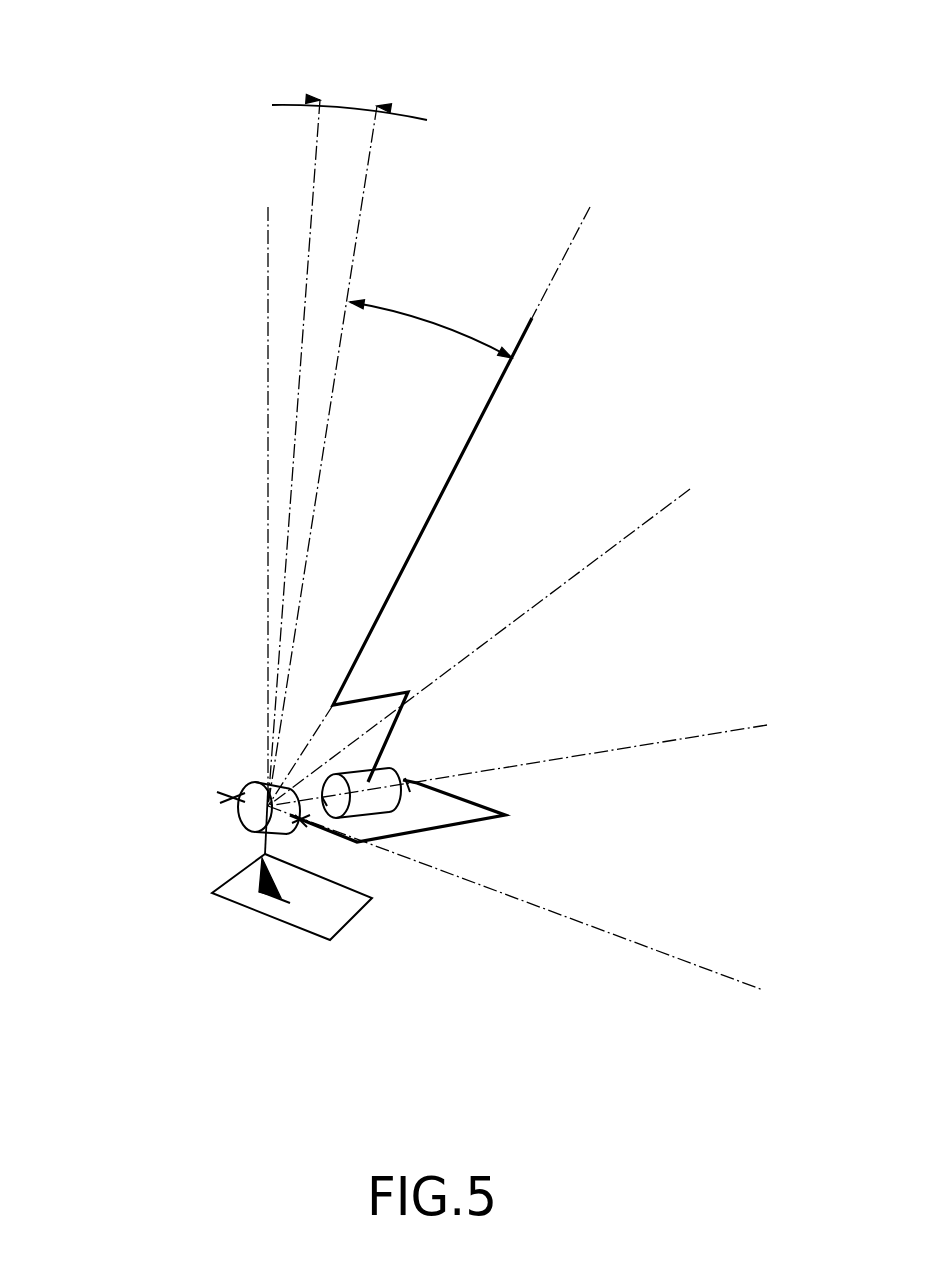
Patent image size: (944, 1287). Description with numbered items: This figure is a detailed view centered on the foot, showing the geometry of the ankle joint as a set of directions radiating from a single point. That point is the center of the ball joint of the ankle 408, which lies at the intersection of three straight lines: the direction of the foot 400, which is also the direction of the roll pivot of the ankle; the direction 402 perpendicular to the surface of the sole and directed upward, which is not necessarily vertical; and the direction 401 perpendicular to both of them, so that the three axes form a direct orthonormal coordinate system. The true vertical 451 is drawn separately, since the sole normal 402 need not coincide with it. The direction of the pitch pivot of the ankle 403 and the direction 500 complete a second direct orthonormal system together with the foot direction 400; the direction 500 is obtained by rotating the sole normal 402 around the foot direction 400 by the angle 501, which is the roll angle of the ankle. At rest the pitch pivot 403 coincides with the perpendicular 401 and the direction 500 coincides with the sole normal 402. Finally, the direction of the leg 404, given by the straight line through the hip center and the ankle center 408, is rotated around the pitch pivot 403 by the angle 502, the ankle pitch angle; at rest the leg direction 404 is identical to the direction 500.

The direction of the foot 400 is at (550, 914).
The perpendicular direction 401 is at (510, 633).
The direction perpendicular to the sole surface 402 is at (285, 453).
The direction of the pitch pivot of the ankle 403 is at (550, 766).
The direction of the leg 404 is at (455, 506).
The center of the ball joint of the ankle 408 is at (262, 802).
The vertical 451 is at (239, 526).
The direction 500 is at (354, 456).
The roll angle of the ankle 501 is at (360, 95).
The ankle pitch angle 502 is at (430, 308).